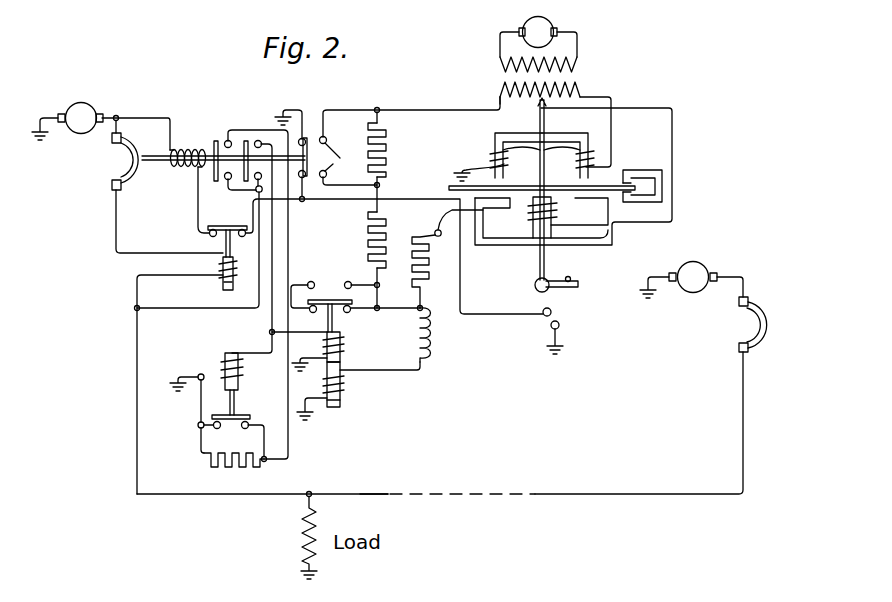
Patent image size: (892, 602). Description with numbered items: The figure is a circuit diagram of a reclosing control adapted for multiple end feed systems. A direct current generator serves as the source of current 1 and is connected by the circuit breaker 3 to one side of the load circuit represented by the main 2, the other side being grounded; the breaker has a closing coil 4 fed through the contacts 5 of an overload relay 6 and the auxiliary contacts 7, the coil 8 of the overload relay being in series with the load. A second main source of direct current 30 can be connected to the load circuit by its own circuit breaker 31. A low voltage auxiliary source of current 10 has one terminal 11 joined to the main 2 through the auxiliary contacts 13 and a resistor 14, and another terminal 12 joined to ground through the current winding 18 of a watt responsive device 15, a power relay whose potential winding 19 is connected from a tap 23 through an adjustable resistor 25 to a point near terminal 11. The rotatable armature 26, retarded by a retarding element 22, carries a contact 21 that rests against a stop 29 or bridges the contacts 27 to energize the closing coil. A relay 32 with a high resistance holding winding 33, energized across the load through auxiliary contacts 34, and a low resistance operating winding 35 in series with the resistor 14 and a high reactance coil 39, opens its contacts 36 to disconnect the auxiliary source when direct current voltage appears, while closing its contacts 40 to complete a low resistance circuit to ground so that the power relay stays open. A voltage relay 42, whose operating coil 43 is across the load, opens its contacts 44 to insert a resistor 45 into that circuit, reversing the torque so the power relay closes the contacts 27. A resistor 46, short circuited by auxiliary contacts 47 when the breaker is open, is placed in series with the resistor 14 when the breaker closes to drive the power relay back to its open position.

The source of current 1 is at (79, 108).
The main 2 is at (371, 492).
The circuit breaker 3 is at (107, 161).
The closing coil 4 is at (183, 170).
The contacts 5 is at (241, 227).
The overload relay 6 is at (206, 273).
The auxiliary contacts 7 is at (308, 163).
The coil 8 is at (236, 270).
The auxiliary source of current 10 is at (554, 45).
The terminal 11 is at (497, 98).
The terminal 12 is at (580, 96).
The auxiliary contacts 13 is at (226, 140).
The resistor 14 is at (368, 229).
The watt responsive device 15 is at (495, 155).
The current winding 18 is at (575, 160).
The potential winding 19 is at (533, 218).
The contact 21 is at (590, 311).
The retarding element 22 is at (641, 170).
The tap 23 is at (538, 100).
The adjustable resistor 25 is at (429, 270).
The rotatable armature 26 is at (442, 188).
The contacts 27 is at (550, 327).
The stop 29 is at (570, 277).
The main source of direct current 30 is at (697, 266).
The circuit breaker 31 is at (763, 313).
The relay 32 is at (344, 414).
The holding winding 33 is at (344, 339).
The auxiliary contacts 34 is at (257, 140).
The operating winding 35 is at (344, 386).
The contacts 36 is at (330, 308).
The high reactance coil 39 is at (429, 350).
The contacts 40 is at (346, 282).
The voltage relay 42 is at (190, 363).
The operating coil 43 is at (242, 369).
The contacts 44 is at (224, 428).
The resistor 45 is at (246, 466).
The resistor 46 is at (388, 150).
The auxiliary contacts 47 is at (340, 156).